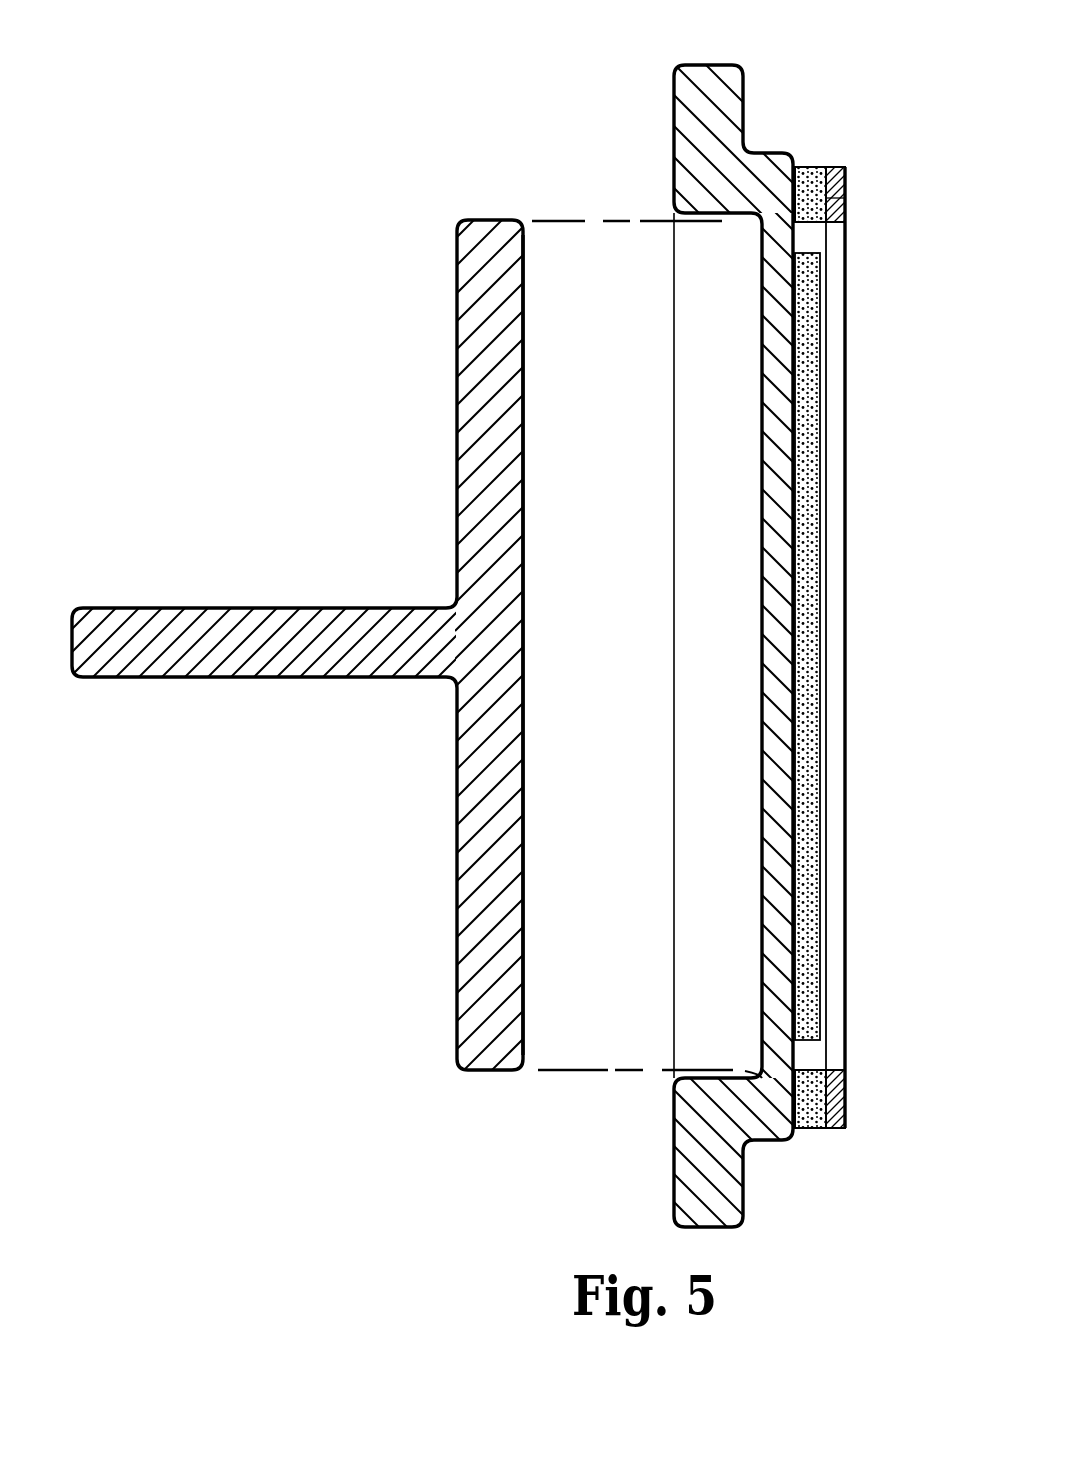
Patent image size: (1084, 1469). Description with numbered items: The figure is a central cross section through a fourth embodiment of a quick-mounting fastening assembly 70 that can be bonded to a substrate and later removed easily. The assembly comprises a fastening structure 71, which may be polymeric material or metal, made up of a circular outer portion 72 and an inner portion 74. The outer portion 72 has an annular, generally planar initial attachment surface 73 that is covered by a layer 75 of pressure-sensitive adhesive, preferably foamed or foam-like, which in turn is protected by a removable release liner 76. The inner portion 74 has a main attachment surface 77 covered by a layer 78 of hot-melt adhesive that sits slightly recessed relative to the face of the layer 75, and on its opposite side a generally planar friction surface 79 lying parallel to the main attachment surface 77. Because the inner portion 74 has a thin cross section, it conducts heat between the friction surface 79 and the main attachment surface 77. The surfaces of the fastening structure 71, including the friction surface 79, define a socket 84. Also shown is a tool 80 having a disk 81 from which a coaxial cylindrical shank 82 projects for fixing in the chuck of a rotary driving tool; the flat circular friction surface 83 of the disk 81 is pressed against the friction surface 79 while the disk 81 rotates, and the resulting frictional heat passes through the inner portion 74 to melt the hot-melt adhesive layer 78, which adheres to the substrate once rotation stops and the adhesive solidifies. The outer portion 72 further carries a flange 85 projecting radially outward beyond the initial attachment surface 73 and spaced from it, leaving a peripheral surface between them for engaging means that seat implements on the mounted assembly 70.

The quick-mounting fastening assembly 70 is at (432, 108).
The fastening structure 71 is at (680, 146).
The circular outer portion 72 is at (704, 82).
The initial attachment surface 73 is at (848, 206).
The inner portion 74 is at (775, 311).
The layer of pressure-sensitive adhesive 75 is at (812, 177).
The removable release liner 76 is at (843, 192).
The main attachment surface 77 is at (797, 497).
The layer of hot-melt adhesive 78 is at (815, 611).
The friction surface 79 is at (762, 849).
The tool 80 is at (447, 352).
The disk 81 is at (473, 962).
The coaxial cylindrical shank 82 is at (180, 658).
The flat circular friction surface 83 is at (527, 827).
The socket 84 is at (723, 1072).
The flange 85 is at (713, 1187).